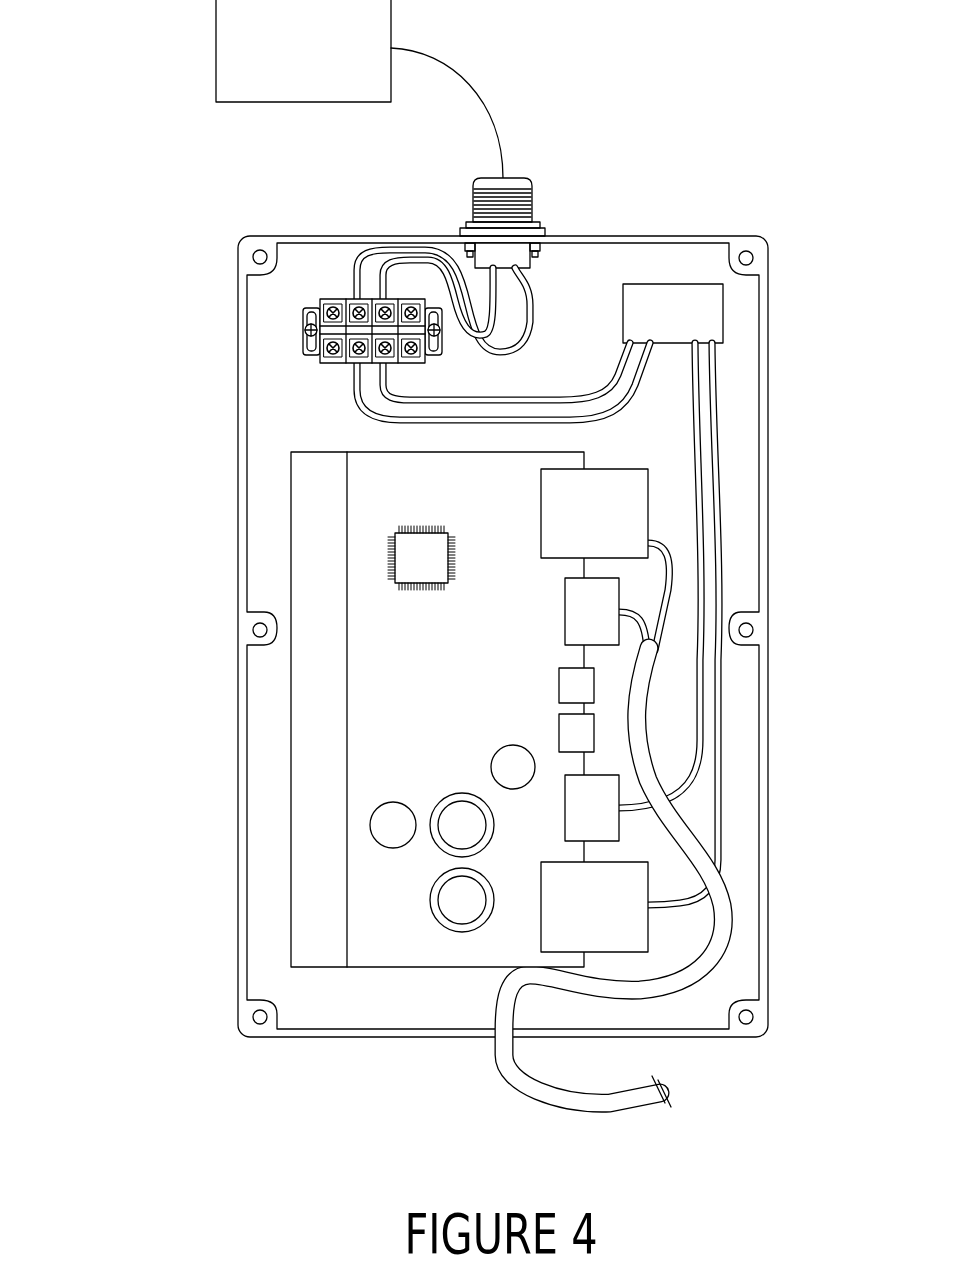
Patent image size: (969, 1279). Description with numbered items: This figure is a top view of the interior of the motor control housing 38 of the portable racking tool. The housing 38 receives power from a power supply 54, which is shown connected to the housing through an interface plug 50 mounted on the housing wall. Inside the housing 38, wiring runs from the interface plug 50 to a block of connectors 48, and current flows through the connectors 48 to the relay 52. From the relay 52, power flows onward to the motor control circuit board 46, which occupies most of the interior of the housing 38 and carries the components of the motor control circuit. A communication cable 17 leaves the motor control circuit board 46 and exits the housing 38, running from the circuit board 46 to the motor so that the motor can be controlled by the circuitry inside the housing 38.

The communication cable 17 is at (510, 1010).
The motor control housing 38 is at (238, 830).
The motor control circuit board 46 is at (375, 475).
The connectors 48 is at (338, 300).
The interface plug 50 is at (527, 205).
The relay 52 is at (672, 284).
The power supply 54 is at (215, 50).